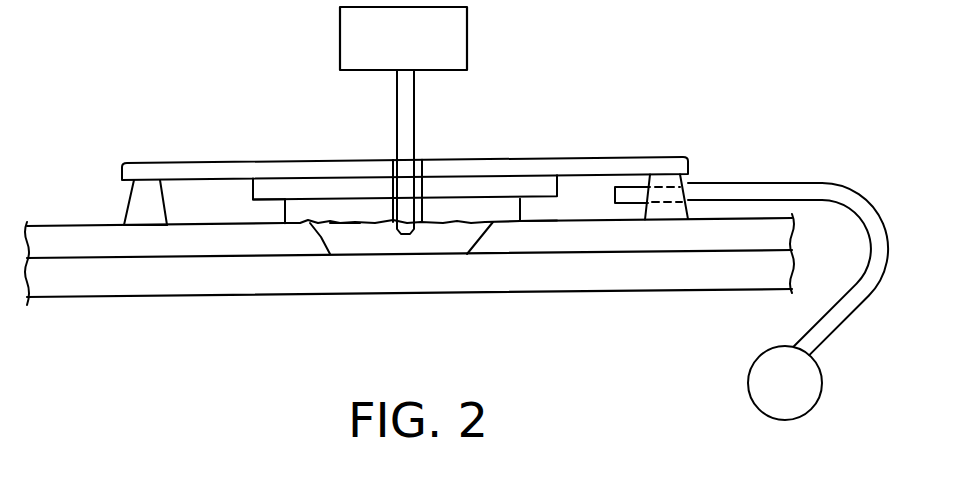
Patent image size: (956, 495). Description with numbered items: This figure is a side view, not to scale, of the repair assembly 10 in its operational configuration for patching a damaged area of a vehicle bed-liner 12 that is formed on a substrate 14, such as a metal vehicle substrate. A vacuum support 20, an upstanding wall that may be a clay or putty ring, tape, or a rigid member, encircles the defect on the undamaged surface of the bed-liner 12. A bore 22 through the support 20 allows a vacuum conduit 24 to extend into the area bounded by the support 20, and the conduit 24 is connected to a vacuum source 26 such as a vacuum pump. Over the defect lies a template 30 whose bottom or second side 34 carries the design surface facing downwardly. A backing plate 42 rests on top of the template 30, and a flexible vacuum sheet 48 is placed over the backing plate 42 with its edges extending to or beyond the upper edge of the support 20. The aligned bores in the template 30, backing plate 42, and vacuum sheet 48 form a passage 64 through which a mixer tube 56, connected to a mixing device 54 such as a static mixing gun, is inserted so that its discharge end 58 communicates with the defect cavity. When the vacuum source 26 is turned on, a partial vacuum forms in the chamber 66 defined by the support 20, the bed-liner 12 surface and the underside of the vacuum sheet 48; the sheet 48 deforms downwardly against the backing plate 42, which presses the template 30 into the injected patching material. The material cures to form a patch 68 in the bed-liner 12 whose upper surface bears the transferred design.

The repair assembly 10 is at (628, 108).
The vehicle bed-liner 12 is at (88, 245).
The substrate 14 is at (160, 280).
The vacuum support 20 is at (133, 212).
The bore 22 is at (690, 178).
The vacuum conduit 24 is at (842, 318).
The vacuum source 26 is at (768, 400).
The template 30 is at (512, 204).
The second side 34 is at (345, 222).
The backing plate 42 is at (254, 190).
The vacuum sheet 48 is at (312, 167).
The mixing device 54 is at (423, 56).
The mixer tube 56 is at (416, 108).
The discharge end 58 is at (398, 235).
The passage 64 is at (424, 153).
The chamber 66 is at (189, 206).
The patch 68 is at (455, 237).